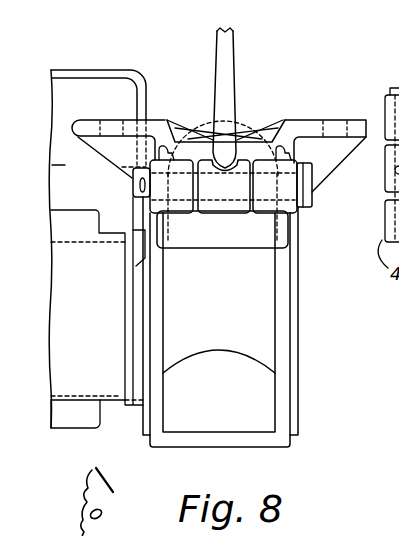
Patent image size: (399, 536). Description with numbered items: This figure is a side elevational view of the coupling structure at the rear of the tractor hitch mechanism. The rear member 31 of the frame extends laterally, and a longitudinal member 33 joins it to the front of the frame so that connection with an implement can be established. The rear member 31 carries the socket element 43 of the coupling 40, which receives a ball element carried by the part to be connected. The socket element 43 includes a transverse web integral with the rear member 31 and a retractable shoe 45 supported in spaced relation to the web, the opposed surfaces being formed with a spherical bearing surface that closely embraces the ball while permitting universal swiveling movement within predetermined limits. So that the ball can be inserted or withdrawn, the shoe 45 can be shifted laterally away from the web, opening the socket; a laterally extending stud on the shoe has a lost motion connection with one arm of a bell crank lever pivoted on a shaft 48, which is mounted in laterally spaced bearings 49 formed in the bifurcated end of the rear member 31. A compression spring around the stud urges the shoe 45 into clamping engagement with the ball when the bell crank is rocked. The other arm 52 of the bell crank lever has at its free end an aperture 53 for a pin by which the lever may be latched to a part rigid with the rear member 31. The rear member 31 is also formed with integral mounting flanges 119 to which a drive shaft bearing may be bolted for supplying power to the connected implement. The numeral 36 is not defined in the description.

The rear member 31 is at (190, 147).
The longitudinal member 33 is at (105, 384).
The funnel socket 36 is at (250, 118).
The coupling 40 is at (304, 246).
The socket element 43 is at (245, 186).
The retractable shoe 45 is at (223, 242).
The shaft 48 is at (311, 198).
The bearings 49 is at (384, 105).
The arm 52 is at (217, 46).
The aperture 53 is at (391, 413).
The mounting flanges 119 is at (102, 100).